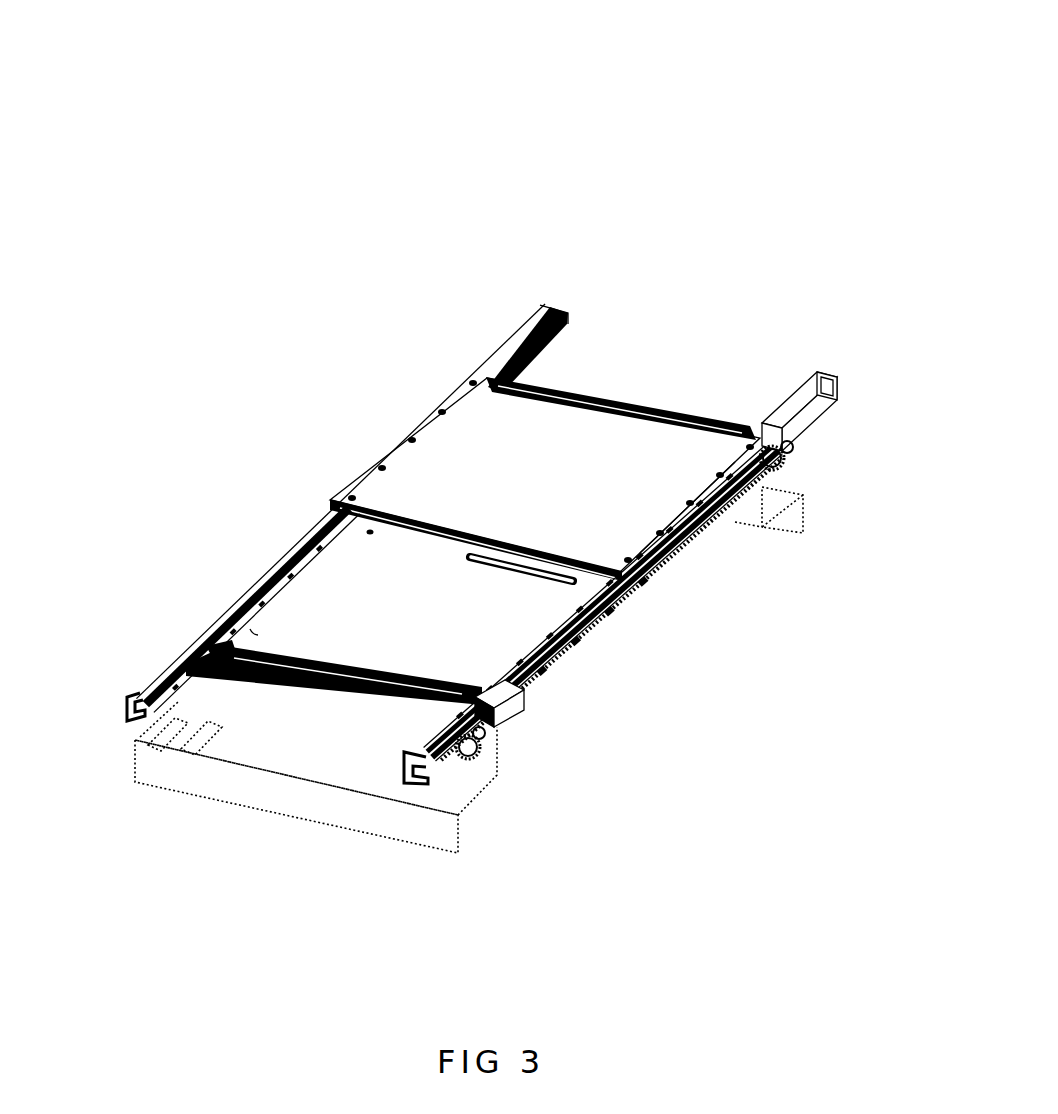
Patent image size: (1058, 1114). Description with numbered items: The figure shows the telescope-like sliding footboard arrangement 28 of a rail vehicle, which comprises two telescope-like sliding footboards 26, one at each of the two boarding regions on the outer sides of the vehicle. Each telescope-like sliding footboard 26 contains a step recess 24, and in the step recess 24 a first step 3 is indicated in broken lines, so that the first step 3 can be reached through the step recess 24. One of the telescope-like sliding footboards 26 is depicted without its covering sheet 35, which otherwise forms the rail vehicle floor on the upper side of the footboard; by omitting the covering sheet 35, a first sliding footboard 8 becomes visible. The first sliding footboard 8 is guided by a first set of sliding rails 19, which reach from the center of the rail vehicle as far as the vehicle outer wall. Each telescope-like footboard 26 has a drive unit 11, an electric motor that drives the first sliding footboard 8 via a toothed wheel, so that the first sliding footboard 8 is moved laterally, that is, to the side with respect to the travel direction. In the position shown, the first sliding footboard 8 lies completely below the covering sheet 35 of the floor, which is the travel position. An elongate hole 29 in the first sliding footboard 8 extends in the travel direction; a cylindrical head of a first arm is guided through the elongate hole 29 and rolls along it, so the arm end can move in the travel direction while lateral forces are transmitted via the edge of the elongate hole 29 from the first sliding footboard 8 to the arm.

The telescope-like sliding footboard arrangement 28 is at (736, 208).
The step recess 24 is at (578, 350).
The telescope-like sliding footboard 26 is at (457, 443).
The first set of sliding rails 19 is at (242, 602).
The drive unit 11 is at (805, 412).
The first step 3 is at (803, 497).
The covering sheet 35 is at (592, 531).
The elongate hole 29 is at (506, 618).
The first sliding footboard 8 is at (587, 627).